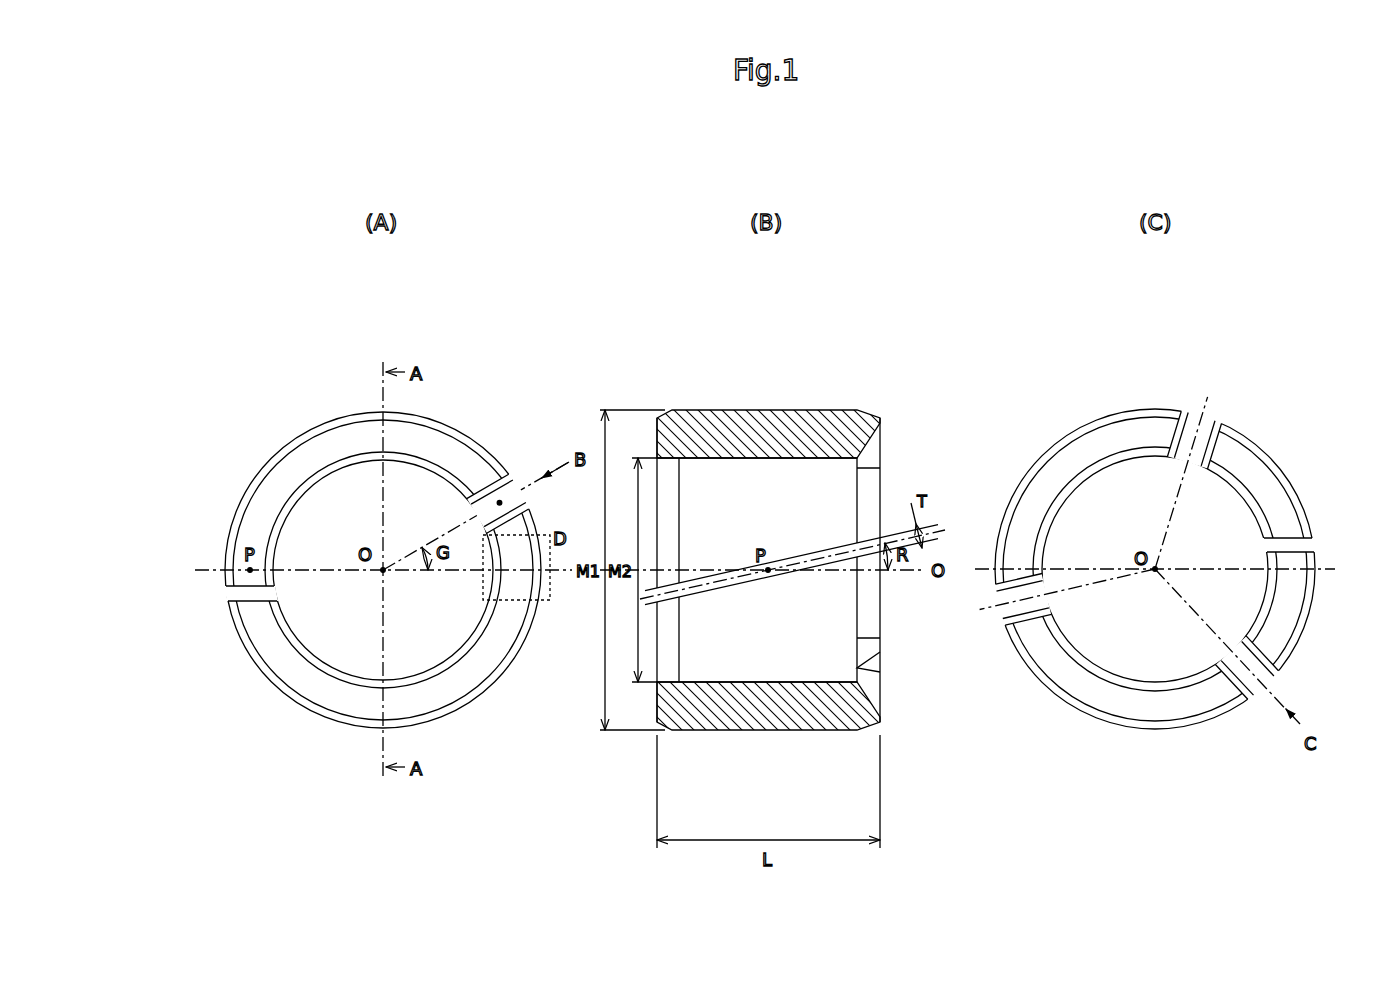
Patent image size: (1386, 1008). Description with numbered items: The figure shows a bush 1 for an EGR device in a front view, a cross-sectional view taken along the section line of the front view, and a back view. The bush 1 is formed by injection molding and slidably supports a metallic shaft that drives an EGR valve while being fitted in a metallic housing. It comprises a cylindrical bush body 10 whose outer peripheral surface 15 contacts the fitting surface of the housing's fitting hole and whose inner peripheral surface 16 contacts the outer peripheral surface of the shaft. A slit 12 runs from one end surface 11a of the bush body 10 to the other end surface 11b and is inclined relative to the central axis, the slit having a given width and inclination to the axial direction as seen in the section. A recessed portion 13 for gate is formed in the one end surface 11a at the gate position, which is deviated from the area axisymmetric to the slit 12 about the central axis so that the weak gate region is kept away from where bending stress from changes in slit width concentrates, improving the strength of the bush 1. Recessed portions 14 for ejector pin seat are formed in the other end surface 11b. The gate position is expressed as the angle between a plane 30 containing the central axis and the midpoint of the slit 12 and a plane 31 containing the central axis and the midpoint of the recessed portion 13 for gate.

The bush 1 is at (522, 302).
The bush body 10 is at (439, 418).
The one end surface 11a is at (305, 455).
The other end surface 11b is at (882, 435).
The slit 12 is at (244, 595).
The recessed portion for gate 13 is at (505, 490).
The recessed portion for ejector pin seat 14 is at (1191, 430).
The outer peripheral surface 15 is at (770, 731).
The inner peripheral surface 16 is at (770, 682).
The plane 30 is at (360, 575).
The plane 31 is at (452, 530).